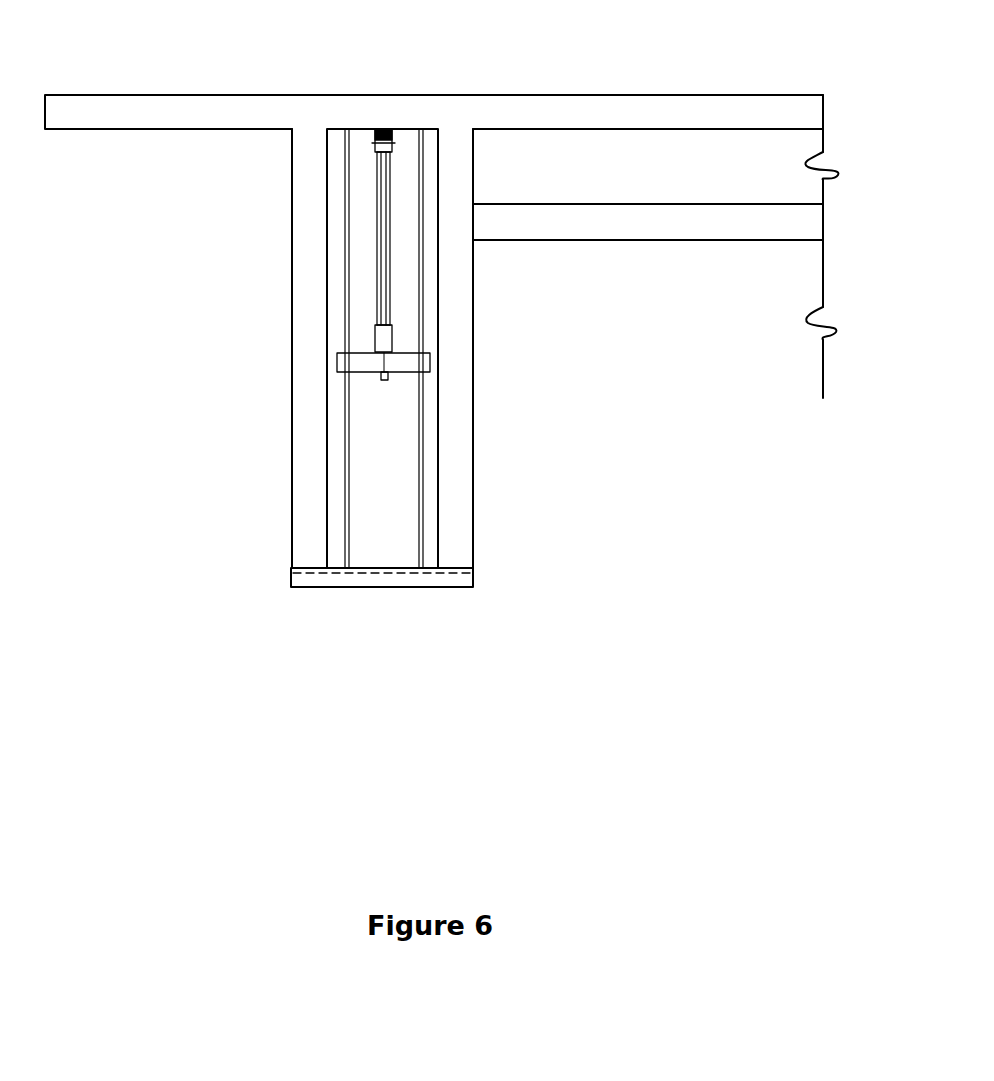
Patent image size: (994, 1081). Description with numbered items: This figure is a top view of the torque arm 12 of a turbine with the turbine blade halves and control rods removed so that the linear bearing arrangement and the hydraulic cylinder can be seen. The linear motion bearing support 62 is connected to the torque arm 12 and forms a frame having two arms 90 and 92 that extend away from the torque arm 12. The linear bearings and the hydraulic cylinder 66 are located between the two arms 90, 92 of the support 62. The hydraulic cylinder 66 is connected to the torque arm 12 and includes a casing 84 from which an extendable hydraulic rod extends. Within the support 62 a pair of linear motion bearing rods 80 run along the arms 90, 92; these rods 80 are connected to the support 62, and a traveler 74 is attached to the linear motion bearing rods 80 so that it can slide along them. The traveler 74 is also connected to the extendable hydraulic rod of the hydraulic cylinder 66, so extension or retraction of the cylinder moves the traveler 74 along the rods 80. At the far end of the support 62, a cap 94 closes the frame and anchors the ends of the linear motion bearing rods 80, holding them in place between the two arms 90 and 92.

The torque arm 12 is at (608, 105).
The linear motion bearing support 62 is at (460, 477).
The hydraulic cylinder 66 is at (390, 165).
The traveler 74 is at (343, 363).
The linear motion bearing rods 80 is at (347, 512).
The casing 84 is at (375, 212).
The arm of support 90 is at (462, 357).
The arm of support 92 is at (302, 438).
The cap 94 is at (383, 583).